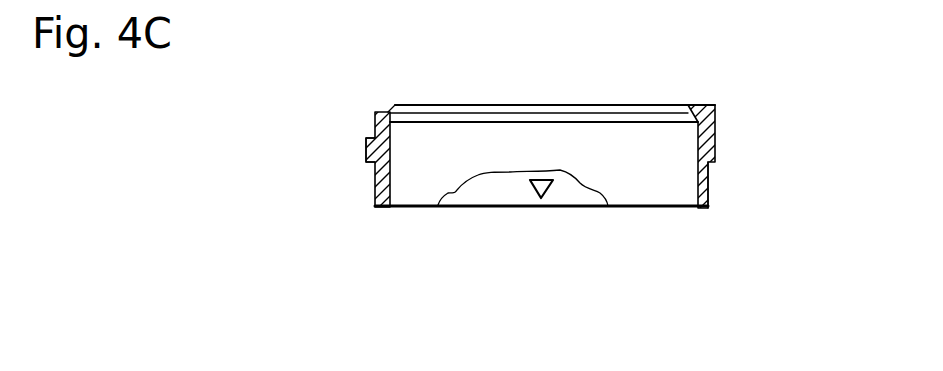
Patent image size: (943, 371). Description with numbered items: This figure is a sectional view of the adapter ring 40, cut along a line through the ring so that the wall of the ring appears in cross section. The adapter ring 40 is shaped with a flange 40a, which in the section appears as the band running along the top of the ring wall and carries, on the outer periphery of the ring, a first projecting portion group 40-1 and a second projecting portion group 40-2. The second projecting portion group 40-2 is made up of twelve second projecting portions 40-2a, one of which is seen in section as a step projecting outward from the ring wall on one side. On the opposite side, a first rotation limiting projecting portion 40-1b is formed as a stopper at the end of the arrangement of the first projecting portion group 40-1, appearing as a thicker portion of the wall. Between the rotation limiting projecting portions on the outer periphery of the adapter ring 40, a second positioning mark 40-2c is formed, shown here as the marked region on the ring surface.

The adapter ring 40 is at (540, 175).
The first projecting portion group 40-1 is at (710, 146).
The first rotation limiting projecting portion 40-1b is at (708, 155).
The second projecting portion group 40-2 is at (369, 162).
The second projecting portion 40-2a is at (364, 148).
The second positioning mark 40-2c is at (525, 214).
The flange 40a is at (703, 104).